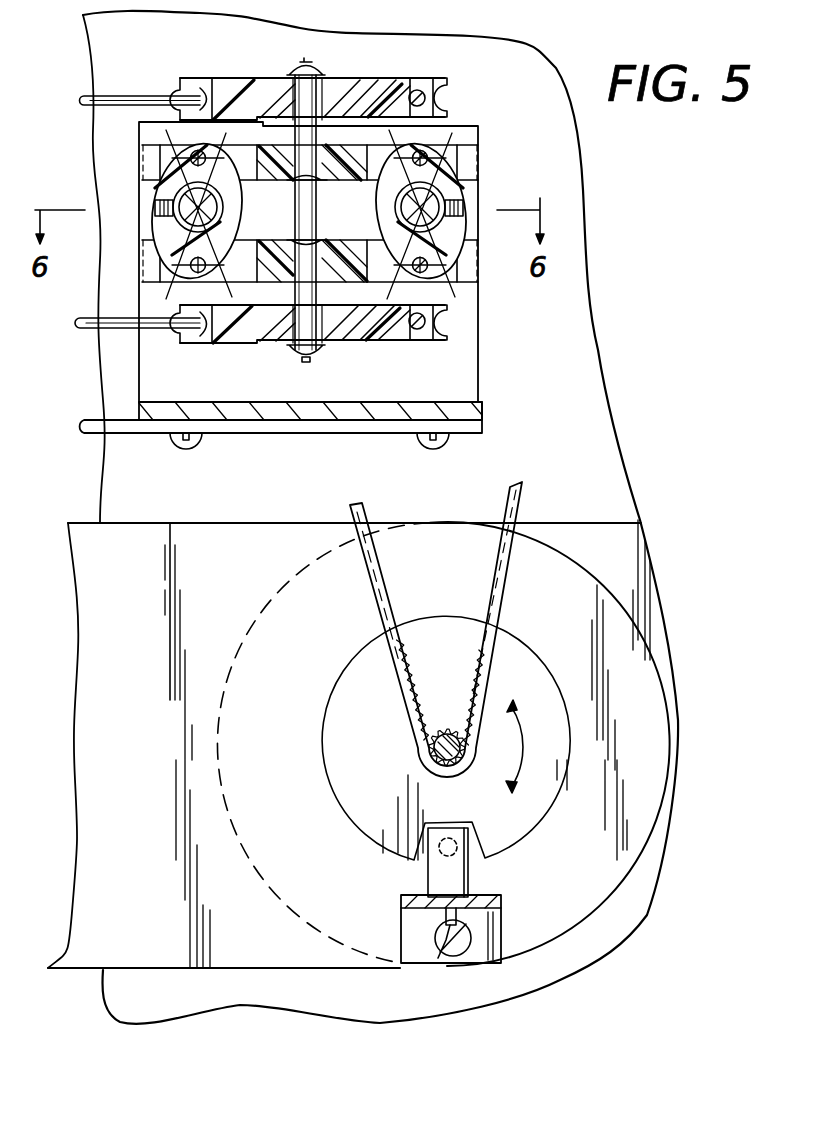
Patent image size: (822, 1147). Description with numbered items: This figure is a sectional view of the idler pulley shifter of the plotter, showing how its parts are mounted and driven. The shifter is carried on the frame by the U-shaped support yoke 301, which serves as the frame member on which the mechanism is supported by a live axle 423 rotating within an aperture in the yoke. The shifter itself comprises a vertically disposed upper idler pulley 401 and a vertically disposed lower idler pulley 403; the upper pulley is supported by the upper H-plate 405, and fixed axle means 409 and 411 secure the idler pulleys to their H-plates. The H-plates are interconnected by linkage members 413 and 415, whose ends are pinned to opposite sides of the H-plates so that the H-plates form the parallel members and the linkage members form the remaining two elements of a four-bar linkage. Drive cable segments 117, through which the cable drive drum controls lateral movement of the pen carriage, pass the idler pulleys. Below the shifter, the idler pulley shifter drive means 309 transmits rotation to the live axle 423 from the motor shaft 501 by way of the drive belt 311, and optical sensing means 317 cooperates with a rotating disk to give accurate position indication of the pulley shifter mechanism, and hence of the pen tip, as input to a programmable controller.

The drive cable segment 117 is at (125, 98).
The U-shaped support yoke 301 is at (464, 411).
The idler pulley shifter drive means 309 is at (647, 776).
The drive belt 311 is at (513, 514).
The optical sensing means 317 is at (455, 878).
The upper idler pulley 401 is at (380, 84).
The lower idler pulley 403 is at (397, 334).
The upper H-plate 405 is at (440, 158).
The fixed axle means 409 is at (320, 70).
The fixed axle means 411 is at (308, 326).
The linkage member 413 is at (381, 214).
The linkage member 415 is at (102, 173).
The live axle 423 is at (432, 208).
The motor shaft 501 is at (433, 748).